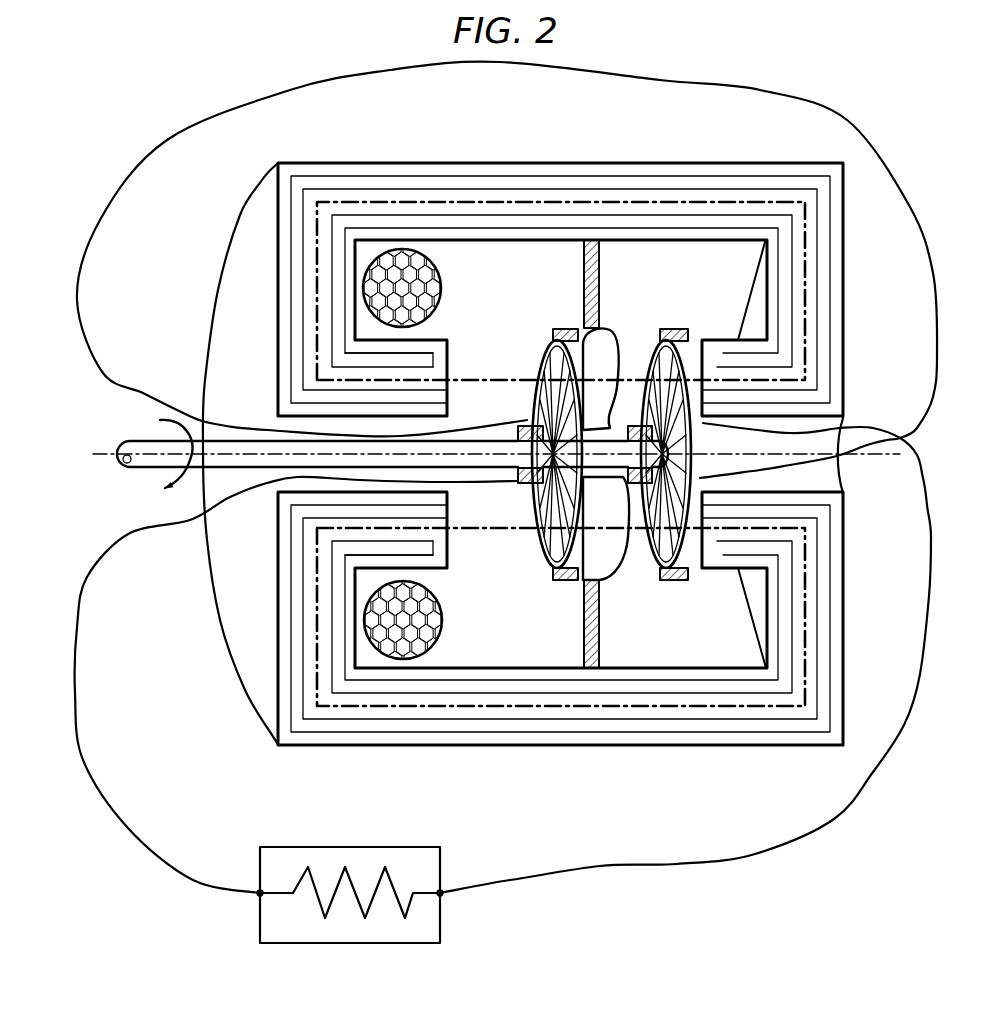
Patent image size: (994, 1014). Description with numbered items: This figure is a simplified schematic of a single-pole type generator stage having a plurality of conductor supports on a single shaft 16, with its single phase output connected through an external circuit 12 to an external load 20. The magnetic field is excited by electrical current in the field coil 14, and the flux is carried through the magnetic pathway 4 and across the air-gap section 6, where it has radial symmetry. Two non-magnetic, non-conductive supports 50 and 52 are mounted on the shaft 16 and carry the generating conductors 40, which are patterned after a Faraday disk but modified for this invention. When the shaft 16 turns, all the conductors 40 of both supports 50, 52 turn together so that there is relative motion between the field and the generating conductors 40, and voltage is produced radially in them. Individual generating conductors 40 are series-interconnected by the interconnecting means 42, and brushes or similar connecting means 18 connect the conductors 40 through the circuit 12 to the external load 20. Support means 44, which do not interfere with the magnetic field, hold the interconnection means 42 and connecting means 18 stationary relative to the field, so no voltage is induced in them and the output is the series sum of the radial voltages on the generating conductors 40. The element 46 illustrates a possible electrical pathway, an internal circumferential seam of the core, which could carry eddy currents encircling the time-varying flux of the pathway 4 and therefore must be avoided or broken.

The magnetic pathway 4 is at (316, 314).
The air-gap section 6 is at (490, 343).
The electrical circuit 12 is at (614, 862).
The field coil 14 is at (444, 289).
The shaft 16 is at (133, 438).
The connecting means 18 is at (686, 325).
The external load 20 is at (356, 848).
The generating conductors 40 is at (549, 562).
The interconnecting means 42 is at (615, 328).
The support means 44 is at (603, 271).
The internal circumferential seam 46 is at (749, 632).
The conductor support 50 is at (531, 371).
The conductor support 52 is at (701, 448).